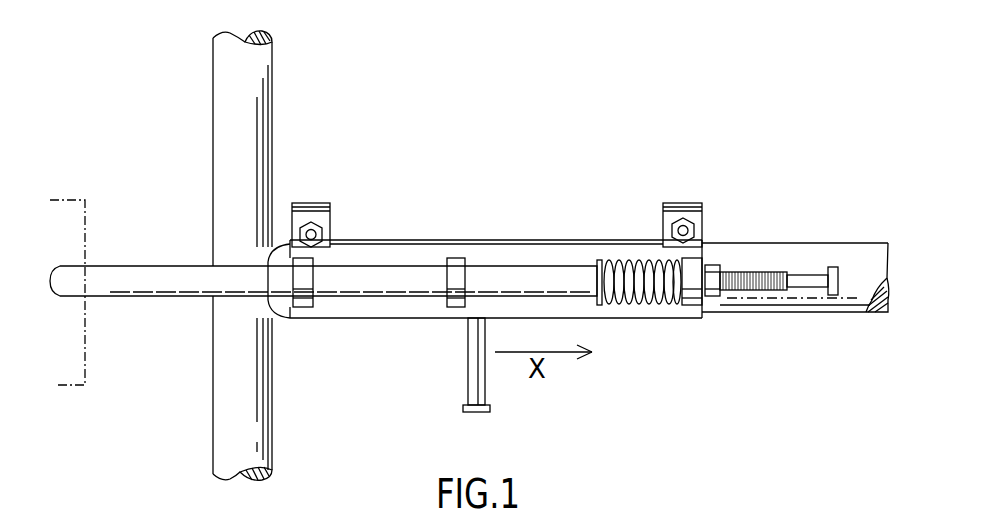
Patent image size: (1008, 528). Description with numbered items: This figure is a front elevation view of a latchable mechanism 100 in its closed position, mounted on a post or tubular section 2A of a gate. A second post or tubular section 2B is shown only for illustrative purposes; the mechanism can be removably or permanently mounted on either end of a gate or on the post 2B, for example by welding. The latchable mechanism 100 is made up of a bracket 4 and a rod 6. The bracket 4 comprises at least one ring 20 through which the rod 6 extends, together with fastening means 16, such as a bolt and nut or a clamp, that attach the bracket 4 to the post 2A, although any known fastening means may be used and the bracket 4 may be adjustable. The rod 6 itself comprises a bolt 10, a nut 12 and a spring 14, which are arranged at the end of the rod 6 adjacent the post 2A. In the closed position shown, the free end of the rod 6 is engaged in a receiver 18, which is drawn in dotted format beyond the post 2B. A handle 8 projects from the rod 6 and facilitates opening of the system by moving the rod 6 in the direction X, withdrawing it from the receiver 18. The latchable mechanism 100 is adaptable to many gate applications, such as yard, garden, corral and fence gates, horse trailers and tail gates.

The latchable mechanism 100 is at (627, 183).
The post 2A is at (865, 250).
The post 2B is at (243, 377).
The bracket 4 is at (527, 255).
The rod 6 is at (420, 291).
The handle 8 is at (478, 378).
The bolt 10 is at (803, 285).
The nut 12 is at (712, 297).
The spring 14 is at (648, 306).
The fastening means 16 is at (312, 222).
The receiver 18 is at (62, 222).
The ring 20 is at (304, 307).